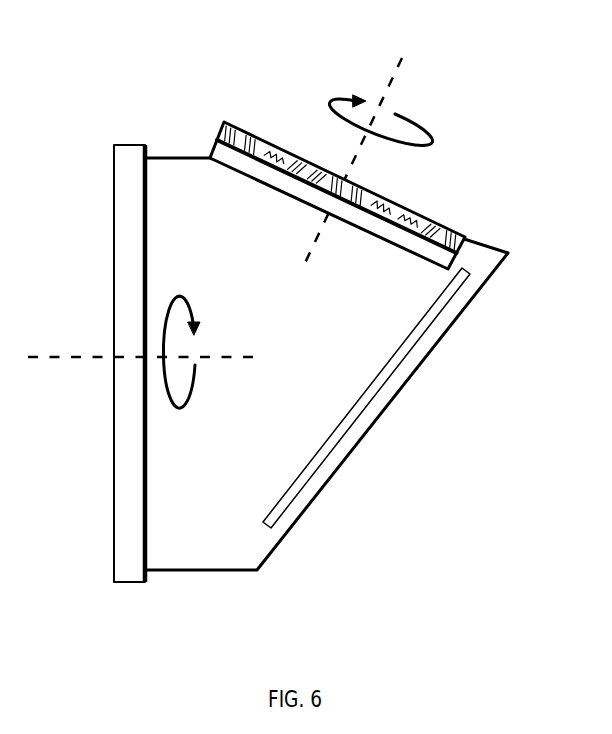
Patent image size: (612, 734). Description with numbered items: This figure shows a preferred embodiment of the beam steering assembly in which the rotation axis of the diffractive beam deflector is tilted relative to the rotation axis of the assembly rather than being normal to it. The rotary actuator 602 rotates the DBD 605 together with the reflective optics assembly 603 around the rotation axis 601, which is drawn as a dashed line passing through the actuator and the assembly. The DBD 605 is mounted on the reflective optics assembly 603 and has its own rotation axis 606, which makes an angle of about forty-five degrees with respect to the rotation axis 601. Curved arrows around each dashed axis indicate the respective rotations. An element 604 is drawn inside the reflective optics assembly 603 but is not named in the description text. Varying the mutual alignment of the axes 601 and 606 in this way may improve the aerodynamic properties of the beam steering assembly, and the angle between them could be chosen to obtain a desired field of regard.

The rotation axis 601 is at (139, 357).
The rotary actuator 602 is at (124, 156).
The reflective optics assembly 603 is at (198, 563).
The inner plate 604 is at (410, 350).
The DBD 605 is at (422, 212).
The rotation axis of DBD 606 is at (388, 147).